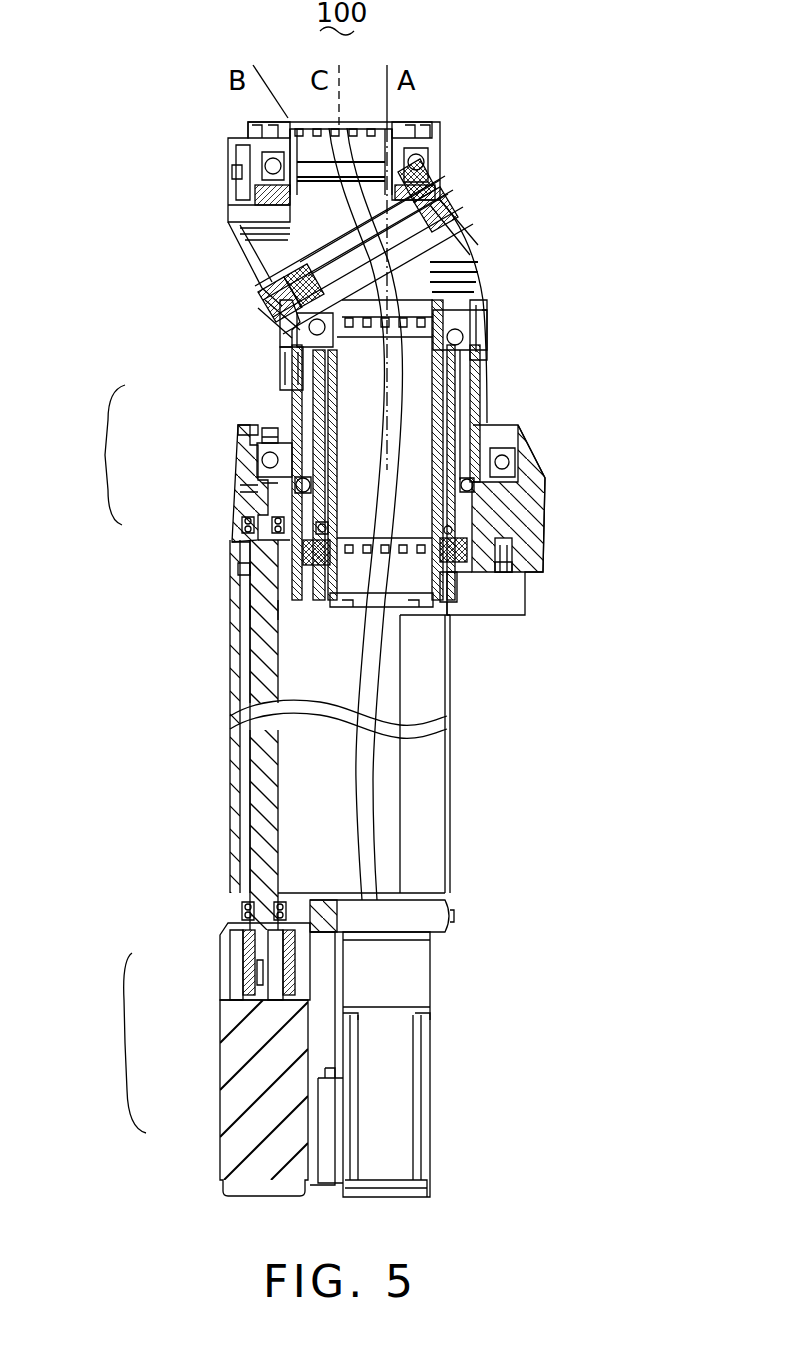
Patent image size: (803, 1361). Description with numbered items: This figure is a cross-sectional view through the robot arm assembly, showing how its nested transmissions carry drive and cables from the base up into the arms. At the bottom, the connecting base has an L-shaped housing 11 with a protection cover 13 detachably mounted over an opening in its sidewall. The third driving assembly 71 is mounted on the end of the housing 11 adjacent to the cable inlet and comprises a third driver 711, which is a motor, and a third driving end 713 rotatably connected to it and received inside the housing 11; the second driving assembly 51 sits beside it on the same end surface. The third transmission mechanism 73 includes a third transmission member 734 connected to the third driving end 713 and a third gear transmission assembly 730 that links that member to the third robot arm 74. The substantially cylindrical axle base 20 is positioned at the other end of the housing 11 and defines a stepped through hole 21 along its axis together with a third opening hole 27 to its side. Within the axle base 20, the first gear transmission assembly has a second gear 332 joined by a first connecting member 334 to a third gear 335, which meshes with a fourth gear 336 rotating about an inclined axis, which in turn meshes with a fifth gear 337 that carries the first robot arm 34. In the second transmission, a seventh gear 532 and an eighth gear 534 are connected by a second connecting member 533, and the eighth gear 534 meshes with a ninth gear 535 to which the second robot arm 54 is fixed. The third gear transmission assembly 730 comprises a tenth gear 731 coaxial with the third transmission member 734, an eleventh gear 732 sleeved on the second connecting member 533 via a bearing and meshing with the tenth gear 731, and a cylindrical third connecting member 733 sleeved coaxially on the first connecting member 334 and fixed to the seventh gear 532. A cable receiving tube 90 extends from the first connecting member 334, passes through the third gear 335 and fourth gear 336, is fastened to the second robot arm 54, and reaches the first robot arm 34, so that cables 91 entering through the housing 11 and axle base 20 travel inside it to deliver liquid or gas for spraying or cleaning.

The first robot arm 34 is at (402, 125).
The fifth gear 337 is at (300, 193).
The cable receiving tube 90 is at (300, 228).
The second robot arm 54 is at (253, 248).
The ninth gear 535 is at (263, 292).
The fourth gear 336 is at (462, 245).
The third gear 335 is at (470, 280).
The third robot arm 74 is at (287, 323).
The eighth gear 534 is at (287, 350).
The first connecting member 334 is at (452, 440).
The second connecting member 533 is at (495, 440).
The axle base 20 is at (525, 490).
The seventh gear 532 is at (470, 523).
The through hole 21 is at (470, 548).
The second gear 332 is at (470, 572).
The third connecting member 733 is at (282, 422).
The third gear transmission assembly 730 is at (86, 455).
The eleventh gear 732 is at (258, 460).
The third opening hole 27 is at (250, 487).
The tenth gear 731 is at (232, 508).
The third transmission mechanism 73 is at (260, 664).
The third transmission member 734 is at (258, 792).
The housing 11 is at (233, 820).
The protection cover 13 is at (450, 678).
The cables 91 is at (362, 805).
The third driving end 713 is at (250, 972).
The third driving assembly 71 is at (117, 1043).
The third driver 711 is at (245, 1126).
The second driving assembly 51 is at (390, 1102).